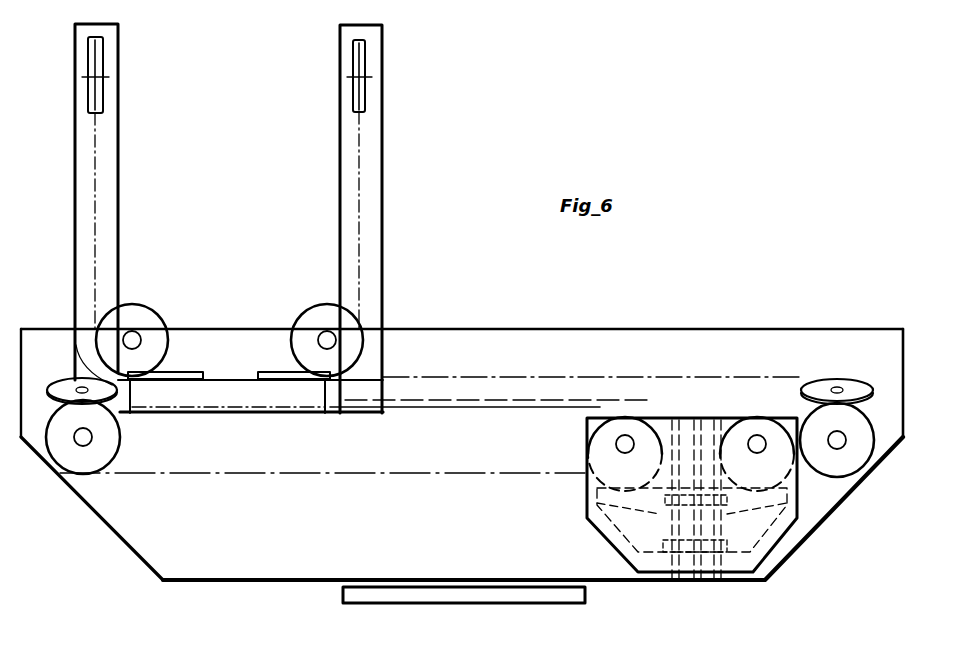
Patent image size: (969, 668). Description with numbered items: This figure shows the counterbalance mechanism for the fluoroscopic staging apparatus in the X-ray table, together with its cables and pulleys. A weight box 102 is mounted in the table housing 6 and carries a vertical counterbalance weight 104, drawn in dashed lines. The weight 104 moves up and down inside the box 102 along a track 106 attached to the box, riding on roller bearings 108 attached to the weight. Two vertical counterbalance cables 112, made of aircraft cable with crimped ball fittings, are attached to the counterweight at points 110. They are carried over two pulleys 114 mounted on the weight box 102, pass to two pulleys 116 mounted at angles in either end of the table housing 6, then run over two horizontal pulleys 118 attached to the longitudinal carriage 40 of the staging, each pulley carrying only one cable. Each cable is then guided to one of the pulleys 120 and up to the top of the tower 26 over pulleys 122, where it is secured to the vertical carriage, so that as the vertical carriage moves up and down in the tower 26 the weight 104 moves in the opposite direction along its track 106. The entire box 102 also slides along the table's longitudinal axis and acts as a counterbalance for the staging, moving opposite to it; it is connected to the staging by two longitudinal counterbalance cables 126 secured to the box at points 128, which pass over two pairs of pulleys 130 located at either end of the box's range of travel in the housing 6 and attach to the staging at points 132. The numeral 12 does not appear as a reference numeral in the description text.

The table housing 6 is at (892, 430).
The carriage 12 is at (255, 404).
The tower 26 is at (113, 148).
The longitudinal carriage 40 is at (82, 380).
The weight box 102 is at (835, 552).
The vertical counterbalance weight 104 is at (787, 555).
The track 106 is at (690, 590).
The roller bearings 108 is at (598, 503).
The points 110 is at (620, 543).
The vertical counterbalance cables 112 is at (722, 375).
The pulleys 114 is at (625, 410).
The pulleys 116 is at (58, 378).
The horizontal pulleys 118 is at (180, 372).
The pulleys 120 is at (141, 316).
The pulleys 122 is at (100, 58).
The longitudinal counterbalance cables 126 is at (325, 470).
The points 128 is at (585, 470).
The pulleys 130 is at (62, 458).
The points 132 is at (125, 415).